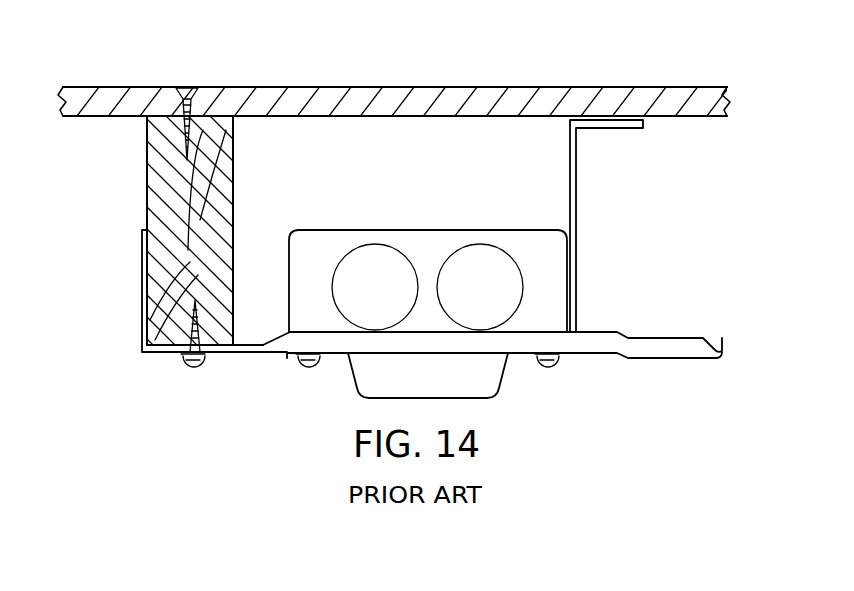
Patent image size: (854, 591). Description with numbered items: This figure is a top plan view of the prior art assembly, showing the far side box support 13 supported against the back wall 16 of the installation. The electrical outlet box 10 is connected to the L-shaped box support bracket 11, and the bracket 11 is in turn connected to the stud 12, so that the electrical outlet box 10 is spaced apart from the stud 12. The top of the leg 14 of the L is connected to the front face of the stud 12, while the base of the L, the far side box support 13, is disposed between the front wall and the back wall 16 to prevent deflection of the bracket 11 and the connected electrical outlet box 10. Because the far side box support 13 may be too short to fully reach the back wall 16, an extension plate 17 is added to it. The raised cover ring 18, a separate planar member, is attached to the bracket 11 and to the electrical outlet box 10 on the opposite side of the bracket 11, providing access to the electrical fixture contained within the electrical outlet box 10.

The electrical outlet box 10 is at (433, 238).
The box support bracket 11 is at (645, 358).
The stud 12 is at (146, 176).
The far side box support 13 is at (140, 308).
The leg 14 is at (158, 353).
The back wall 16 is at (392, 93).
The extension plate 17 is at (576, 187).
The raised cover ring 18 is at (357, 379).